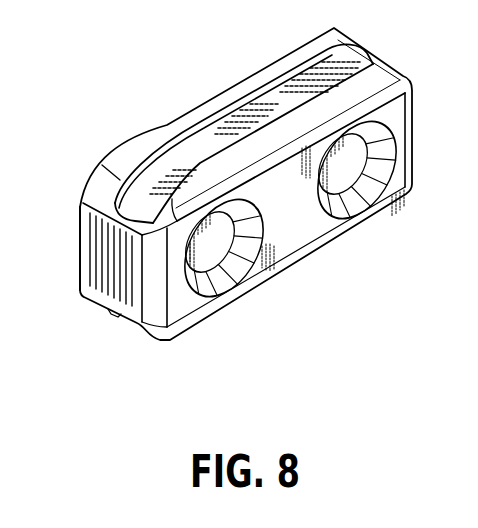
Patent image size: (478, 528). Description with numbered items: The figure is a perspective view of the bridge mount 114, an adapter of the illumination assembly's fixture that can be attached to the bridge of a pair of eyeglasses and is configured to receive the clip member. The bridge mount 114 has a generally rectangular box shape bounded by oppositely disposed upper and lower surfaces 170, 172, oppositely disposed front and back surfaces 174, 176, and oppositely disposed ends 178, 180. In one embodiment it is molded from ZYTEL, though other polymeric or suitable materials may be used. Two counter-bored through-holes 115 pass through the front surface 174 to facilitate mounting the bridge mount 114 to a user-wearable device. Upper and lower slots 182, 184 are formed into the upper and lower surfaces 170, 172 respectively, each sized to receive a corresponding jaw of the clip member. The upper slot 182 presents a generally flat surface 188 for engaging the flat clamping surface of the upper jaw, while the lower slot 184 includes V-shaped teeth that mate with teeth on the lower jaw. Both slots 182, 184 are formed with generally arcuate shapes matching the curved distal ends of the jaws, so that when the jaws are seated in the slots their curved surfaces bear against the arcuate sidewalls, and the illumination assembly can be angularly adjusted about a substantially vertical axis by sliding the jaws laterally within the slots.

The bridge mount 114 is at (153, 35).
The counter-bored through-holes 115 is at (234, 270).
The upper surface 170 is at (132, 153).
The lower surface 172 is at (93, 310).
The front surface 174 is at (303, 224).
The back surface 176 is at (80, 245).
The end 178 is at (95, 263).
The end 180 is at (413, 124).
The upper slot 182 is at (199, 154).
The lower slot 184 is at (137, 323).
The flat surface 188 is at (271, 110).